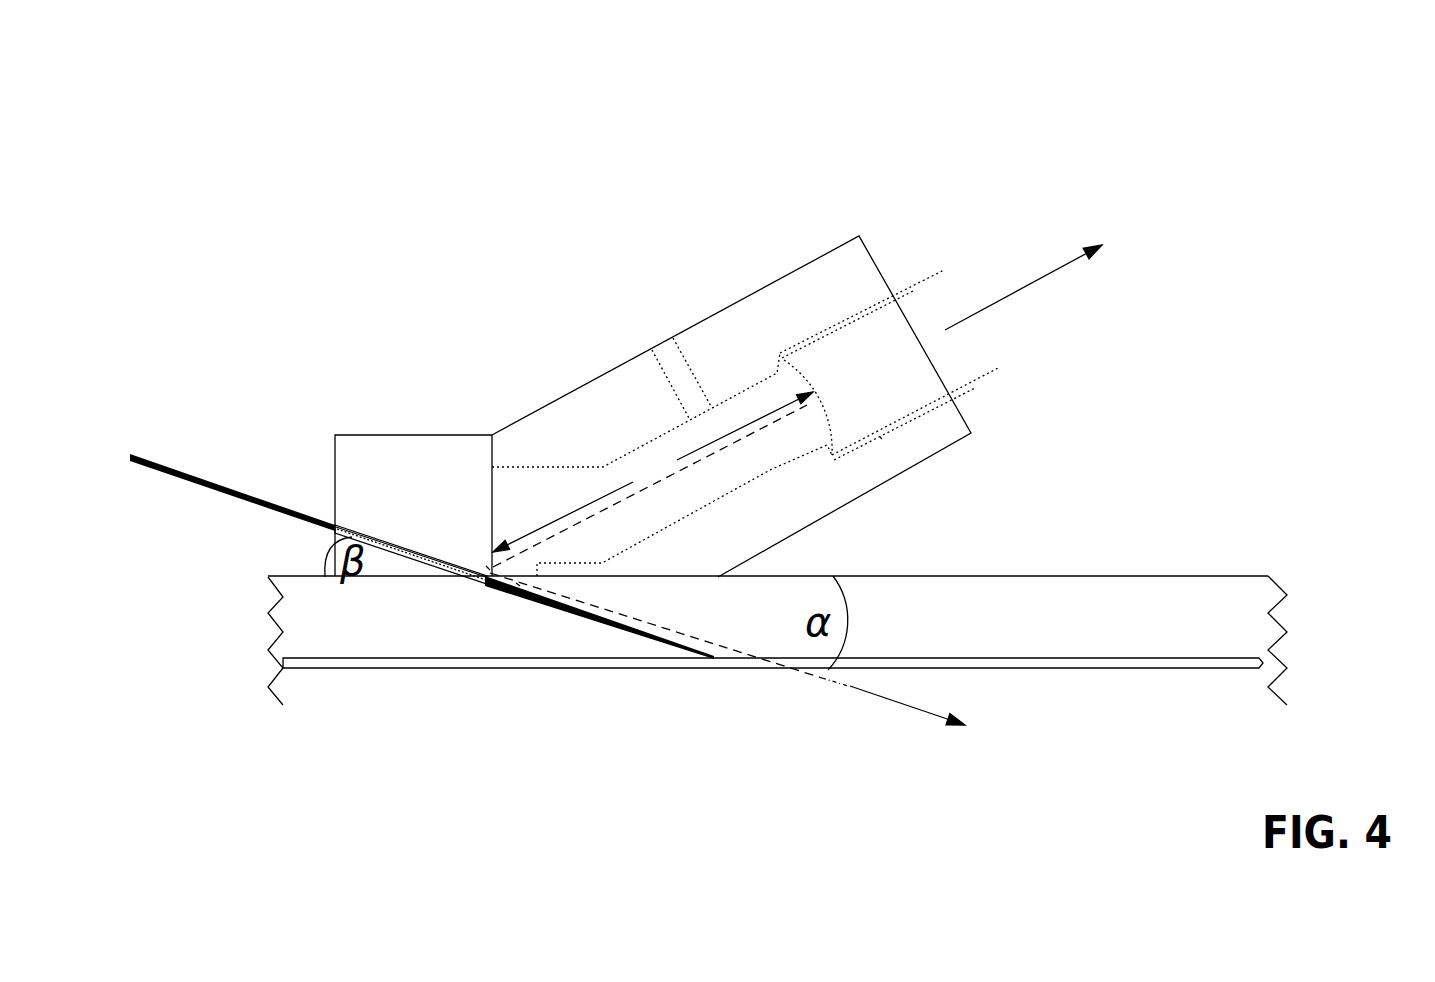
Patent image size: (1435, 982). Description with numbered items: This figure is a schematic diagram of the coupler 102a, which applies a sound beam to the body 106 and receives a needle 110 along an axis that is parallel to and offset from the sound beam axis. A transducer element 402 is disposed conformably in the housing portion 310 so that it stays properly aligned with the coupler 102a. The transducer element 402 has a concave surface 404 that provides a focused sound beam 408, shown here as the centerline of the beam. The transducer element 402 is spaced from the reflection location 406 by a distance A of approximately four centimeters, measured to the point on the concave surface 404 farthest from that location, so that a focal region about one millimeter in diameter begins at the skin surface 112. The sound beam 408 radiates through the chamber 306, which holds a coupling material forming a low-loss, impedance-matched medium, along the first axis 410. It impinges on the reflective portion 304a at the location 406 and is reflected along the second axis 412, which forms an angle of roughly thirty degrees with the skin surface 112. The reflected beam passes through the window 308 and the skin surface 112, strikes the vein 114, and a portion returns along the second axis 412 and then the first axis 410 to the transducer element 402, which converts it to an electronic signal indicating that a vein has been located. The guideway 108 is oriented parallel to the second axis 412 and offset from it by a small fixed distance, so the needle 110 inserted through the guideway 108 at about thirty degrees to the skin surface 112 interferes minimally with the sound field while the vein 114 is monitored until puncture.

The coupler 102a is at (1003, 128).
The body 106 is at (1290, 508).
The guideway 108 is at (402, 557).
The needle 110 is at (297, 507).
The skin surface 112 is at (1045, 576).
The vein 114 is at (1073, 668).
The reflective portion 304a is at (410, 433).
The chamber 306 is at (662, 432).
The window 308 is at (521, 598).
The housing portion 310 is at (872, 437).
The transducer element 402 is at (915, 287).
The concave surface 404 is at (828, 420).
The location 406 is at (474, 559).
The sound beam 408 is at (653, 480).
The first axis 410 is at (1010, 297).
The second axis 412 is at (922, 712).
The distance A is at (653, 472).